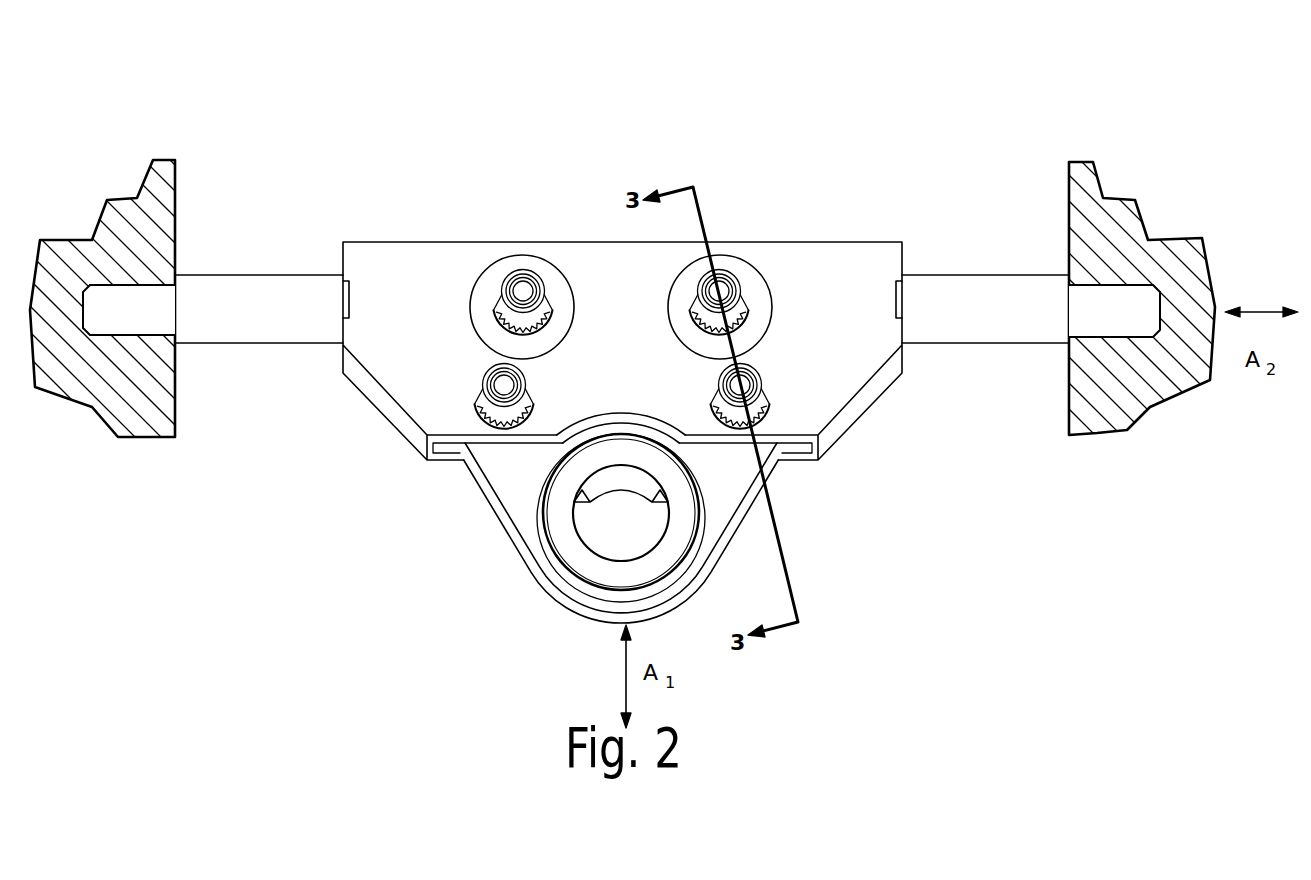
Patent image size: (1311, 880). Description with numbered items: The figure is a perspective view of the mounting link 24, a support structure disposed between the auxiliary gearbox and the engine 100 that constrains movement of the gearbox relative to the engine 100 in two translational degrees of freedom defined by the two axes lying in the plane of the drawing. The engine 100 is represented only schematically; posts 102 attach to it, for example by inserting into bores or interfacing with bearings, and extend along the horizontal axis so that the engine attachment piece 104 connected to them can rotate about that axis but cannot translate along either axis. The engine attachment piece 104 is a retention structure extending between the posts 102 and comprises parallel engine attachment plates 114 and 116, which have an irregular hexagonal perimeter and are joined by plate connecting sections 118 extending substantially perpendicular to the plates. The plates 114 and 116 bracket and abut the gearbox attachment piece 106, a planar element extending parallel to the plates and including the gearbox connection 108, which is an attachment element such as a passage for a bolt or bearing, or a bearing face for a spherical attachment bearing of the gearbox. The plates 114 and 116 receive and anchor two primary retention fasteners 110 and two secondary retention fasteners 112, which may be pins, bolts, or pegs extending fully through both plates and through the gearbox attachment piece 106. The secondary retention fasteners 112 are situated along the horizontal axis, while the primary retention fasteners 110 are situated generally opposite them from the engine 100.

The mounting link 24 is at (917, 106).
The engine 100 is at (178, 413).
The posts 102 is at (236, 302).
The engine attachment piece 104 is at (378, 247).
The gearbox attachment piece 106 is at (735, 500).
The gearbox connection 108 is at (593, 553).
The primary retention fastener 110 is at (522, 272).
The secondary retention fastener 112 is at (722, 280).
The engine attachment plate 114 is at (430, 280).
The engine attachment plate 116 is at (437, 462).
The plate connecting sections 118 is at (887, 398).